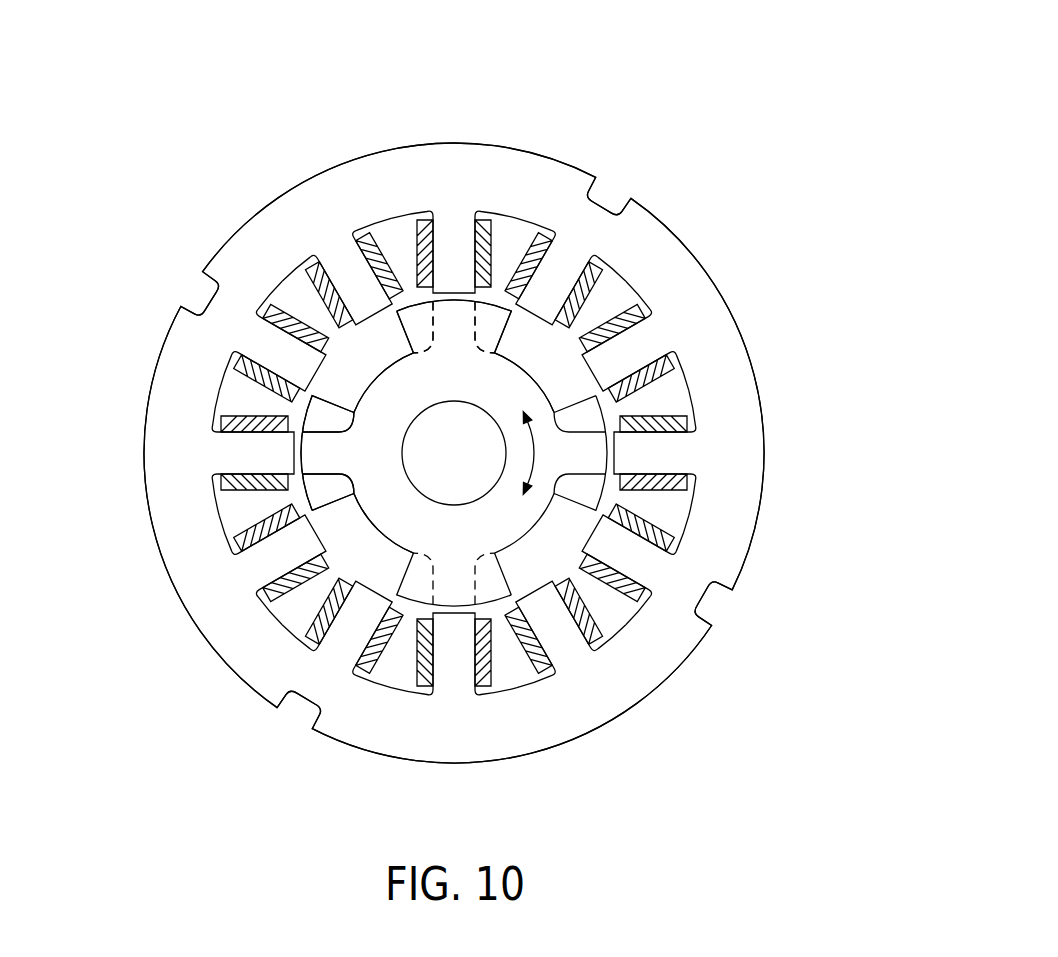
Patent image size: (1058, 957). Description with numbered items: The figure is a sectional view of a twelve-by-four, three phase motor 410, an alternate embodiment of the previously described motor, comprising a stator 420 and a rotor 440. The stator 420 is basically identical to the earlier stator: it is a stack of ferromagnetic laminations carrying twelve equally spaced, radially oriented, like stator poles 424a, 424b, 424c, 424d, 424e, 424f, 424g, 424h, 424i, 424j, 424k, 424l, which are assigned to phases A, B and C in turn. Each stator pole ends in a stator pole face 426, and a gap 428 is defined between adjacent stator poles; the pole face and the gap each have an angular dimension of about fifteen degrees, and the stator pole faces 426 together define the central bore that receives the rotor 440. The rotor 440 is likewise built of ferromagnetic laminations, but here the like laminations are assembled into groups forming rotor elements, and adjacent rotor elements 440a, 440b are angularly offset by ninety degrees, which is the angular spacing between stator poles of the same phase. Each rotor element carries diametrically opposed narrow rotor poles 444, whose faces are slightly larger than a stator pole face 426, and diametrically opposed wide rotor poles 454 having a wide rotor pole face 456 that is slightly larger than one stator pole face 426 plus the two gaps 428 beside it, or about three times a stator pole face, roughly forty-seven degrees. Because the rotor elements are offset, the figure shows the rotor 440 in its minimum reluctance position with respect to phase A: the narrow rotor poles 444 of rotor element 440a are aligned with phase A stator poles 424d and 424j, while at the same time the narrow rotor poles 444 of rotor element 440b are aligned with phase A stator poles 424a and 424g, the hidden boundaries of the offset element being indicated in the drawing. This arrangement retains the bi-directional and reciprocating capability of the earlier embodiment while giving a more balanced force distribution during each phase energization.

The motor 410 is at (658, 146).
The stator 420 is at (250, 220).
The stator pole 424a is at (465, 242).
The stator pole 424b is at (563, 270).
The stator pole 424c is at (637, 352).
The stator pole 424d is at (665, 447).
The stator pole 424e is at (640, 559).
The stator pole 424f is at (558, 640).
The stator pole 424g is at (452, 668).
The stator pole 424h is at (347, 640).
The stator pole 424i is at (270, 560).
The stator pole 424j is at (252, 440).
The stator pole 424k is at (273, 350).
The stator pole 424l is at (347, 273).
The stator pole face 426 is at (388, 502).
The gap 428 is at (357, 350).
The rotor 440 is at (523, 365).
The rotor element 440a is at (387, 498).
The rotor element 440b is at (320, 489).
The narrow rotor pole 444 is at (317, 452).
The wide rotor pole 454 is at (457, 312).
The wide rotor pole face 456 is at (412, 300).